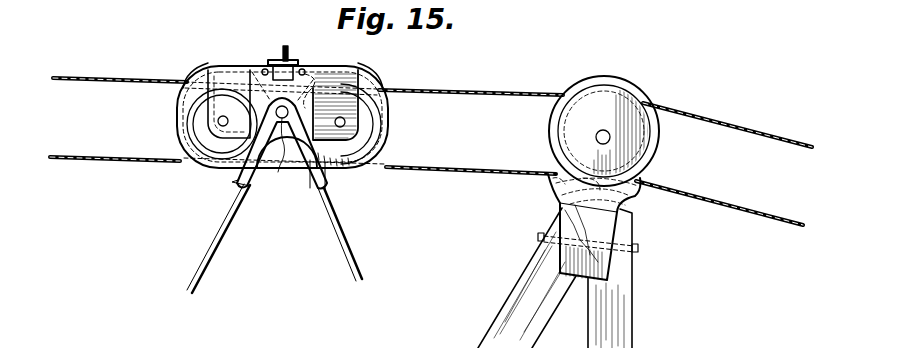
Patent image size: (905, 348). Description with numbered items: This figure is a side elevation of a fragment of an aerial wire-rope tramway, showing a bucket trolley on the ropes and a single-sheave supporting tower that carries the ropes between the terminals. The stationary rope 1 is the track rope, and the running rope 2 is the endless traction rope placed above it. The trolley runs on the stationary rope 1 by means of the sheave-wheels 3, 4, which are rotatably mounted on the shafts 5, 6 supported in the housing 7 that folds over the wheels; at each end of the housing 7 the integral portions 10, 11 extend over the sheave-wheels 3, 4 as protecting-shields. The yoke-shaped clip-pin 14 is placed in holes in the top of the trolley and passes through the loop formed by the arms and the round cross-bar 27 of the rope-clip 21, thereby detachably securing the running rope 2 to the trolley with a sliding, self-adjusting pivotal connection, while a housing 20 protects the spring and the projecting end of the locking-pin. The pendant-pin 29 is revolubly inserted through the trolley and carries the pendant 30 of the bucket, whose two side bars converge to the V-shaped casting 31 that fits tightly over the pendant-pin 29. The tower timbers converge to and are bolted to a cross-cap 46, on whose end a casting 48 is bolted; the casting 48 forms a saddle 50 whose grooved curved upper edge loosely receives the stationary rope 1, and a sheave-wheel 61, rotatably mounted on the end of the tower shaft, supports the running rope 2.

The stationary rope 1 is at (141, 168).
The running rope 2 is at (124, 84).
The sheave-wheel 3 is at (184, 125).
The sheave-wheel 4 is at (385, 124).
The shaft 5 is at (228, 118).
The shaft 6 is at (346, 126).
The housing 7 is at (246, 76).
The integral portion 10 is at (196, 74).
The integral portion 11 is at (374, 83).
The clip-pin 14 is at (291, 62).
The housing 20 is at (305, 80).
The rope-clip 21 is at (272, 67).
The cross-bar 27 is at (262, 42).
The pendant-pin 29 is at (279, 172).
The pendant 30 is at (217, 250).
The V-shaped casting 31 is at (238, 172).
The cross-cap 46 is at (612, 268).
The casting 48 is at (618, 212).
The saddle 50 is at (575, 192).
The sheave-wheel 61 is at (658, 150).